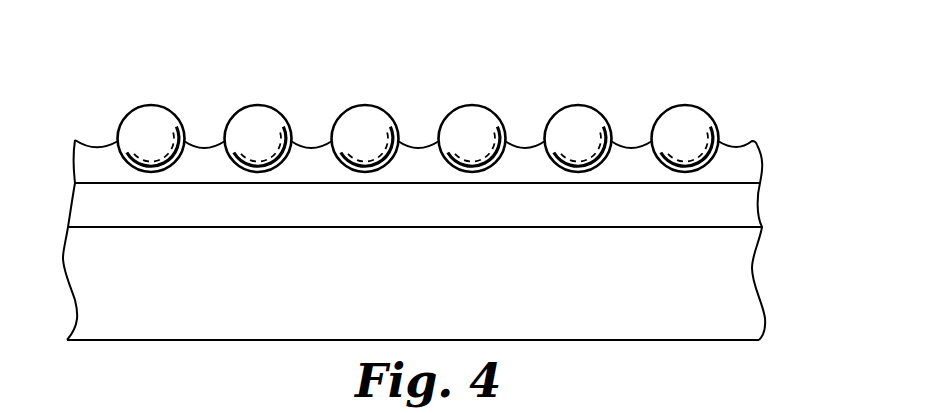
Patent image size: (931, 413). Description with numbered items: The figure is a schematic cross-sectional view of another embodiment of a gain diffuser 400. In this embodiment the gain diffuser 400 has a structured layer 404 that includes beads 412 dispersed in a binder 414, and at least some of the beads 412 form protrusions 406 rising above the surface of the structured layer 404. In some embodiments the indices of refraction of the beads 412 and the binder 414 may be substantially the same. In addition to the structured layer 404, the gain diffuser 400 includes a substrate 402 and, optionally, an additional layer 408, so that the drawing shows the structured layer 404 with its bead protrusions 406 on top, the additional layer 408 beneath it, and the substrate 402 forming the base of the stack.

The gain diffuser 400 is at (677, 53).
The substrate 402 is at (752, 286).
The structured layer 404 is at (740, 152).
The protrusions 406 is at (143, 105).
The additional layer 408 is at (757, 208).
The beads 412 is at (232, 128).
The binder 414 is at (313, 157).